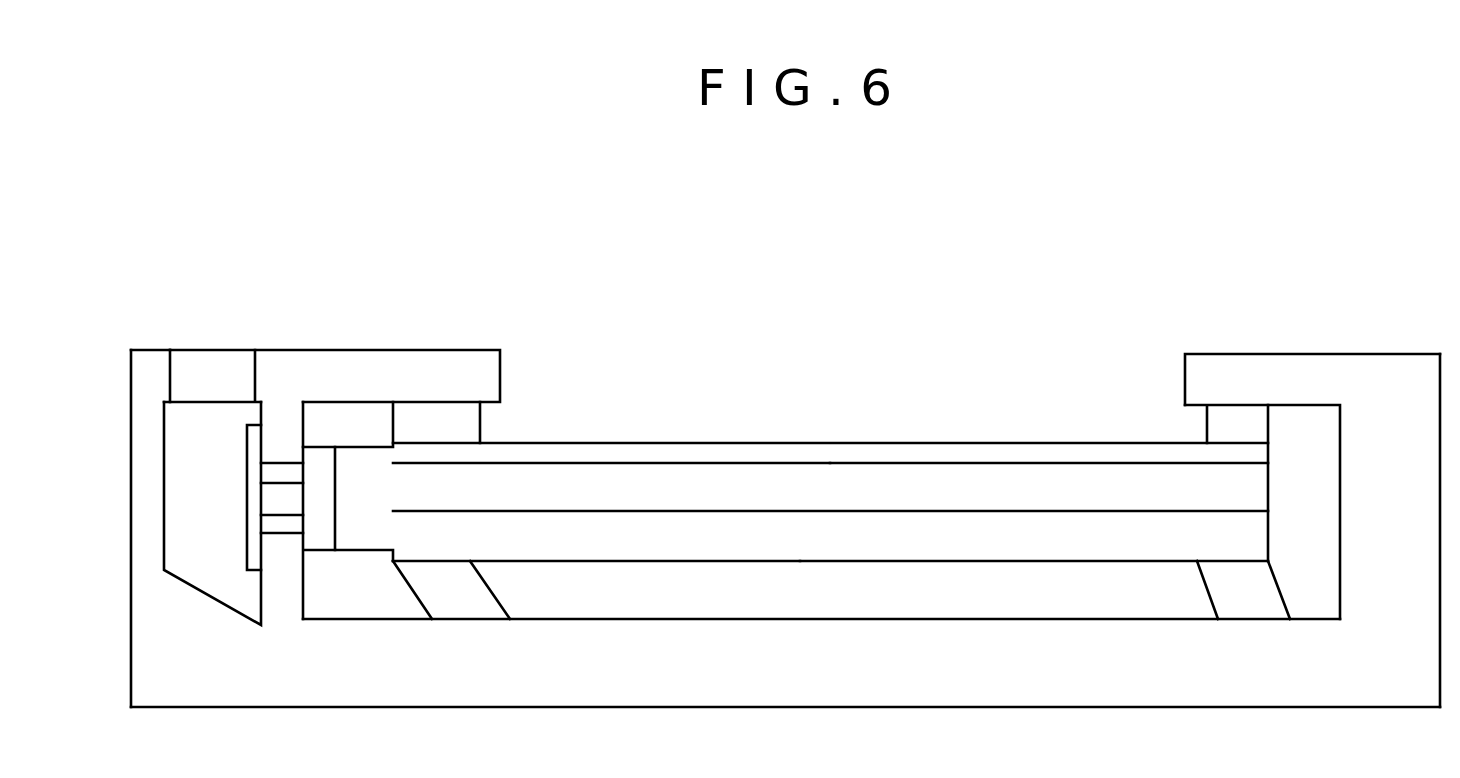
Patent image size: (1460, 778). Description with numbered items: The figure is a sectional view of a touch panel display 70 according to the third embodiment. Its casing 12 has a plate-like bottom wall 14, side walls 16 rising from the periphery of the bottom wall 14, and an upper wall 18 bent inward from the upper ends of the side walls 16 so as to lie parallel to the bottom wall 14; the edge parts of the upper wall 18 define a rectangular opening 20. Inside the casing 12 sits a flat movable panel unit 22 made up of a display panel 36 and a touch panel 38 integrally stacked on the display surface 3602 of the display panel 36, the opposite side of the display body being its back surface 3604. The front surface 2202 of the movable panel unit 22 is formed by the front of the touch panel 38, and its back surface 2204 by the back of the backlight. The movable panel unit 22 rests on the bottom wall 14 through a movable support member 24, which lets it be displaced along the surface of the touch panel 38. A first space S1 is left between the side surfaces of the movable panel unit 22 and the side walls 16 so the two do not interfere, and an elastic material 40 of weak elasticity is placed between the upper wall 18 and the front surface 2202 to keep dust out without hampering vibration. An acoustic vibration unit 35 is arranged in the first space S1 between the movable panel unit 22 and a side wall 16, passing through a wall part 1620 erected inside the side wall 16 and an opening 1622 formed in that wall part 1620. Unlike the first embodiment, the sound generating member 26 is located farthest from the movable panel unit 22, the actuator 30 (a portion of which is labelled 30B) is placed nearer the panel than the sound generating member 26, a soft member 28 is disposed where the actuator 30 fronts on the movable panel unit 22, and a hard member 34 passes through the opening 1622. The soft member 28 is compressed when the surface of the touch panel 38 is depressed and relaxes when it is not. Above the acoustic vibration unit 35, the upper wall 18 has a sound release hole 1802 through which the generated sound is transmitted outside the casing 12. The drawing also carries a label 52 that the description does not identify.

The touch panel display 70 is at (231, 228).
The casing 12 is at (143, 349).
The bottom wall 14 is at (723, 680).
The side wall 16 is at (132, 510).
The upper wall 18 is at (440, 350).
The sound release hole 1802 is at (172, 395).
The wall part 1620 is at (256, 417).
The opening 1622 is at (288, 462).
The opening 20 is at (500, 383).
The movable panel unit 22 is at (595, 445).
The front surface 2202 is at (750, 442).
The back surface 2204 is at (652, 566).
The movable support member 24 is at (458, 600).
The sound generating member 26 is at (252, 540).
The soft member 28 is at (362, 537).
The actuator 30 is at (318, 537).
The guide shaft end 30B is at (1107, 538).
The hard member 34 is at (282, 500).
The acoustic vibration unit 35 is at (357, 432).
The display panel 36 is at (893, 505).
The display surface 3602 is at (973, 462).
The back surface 3604 is at (1023, 512).
The touch panel 38 is at (815, 442).
The elastic material 40 is at (1228, 428).
The gap 52 is at (1197, 427).
The first space S1 is at (1300, 477).